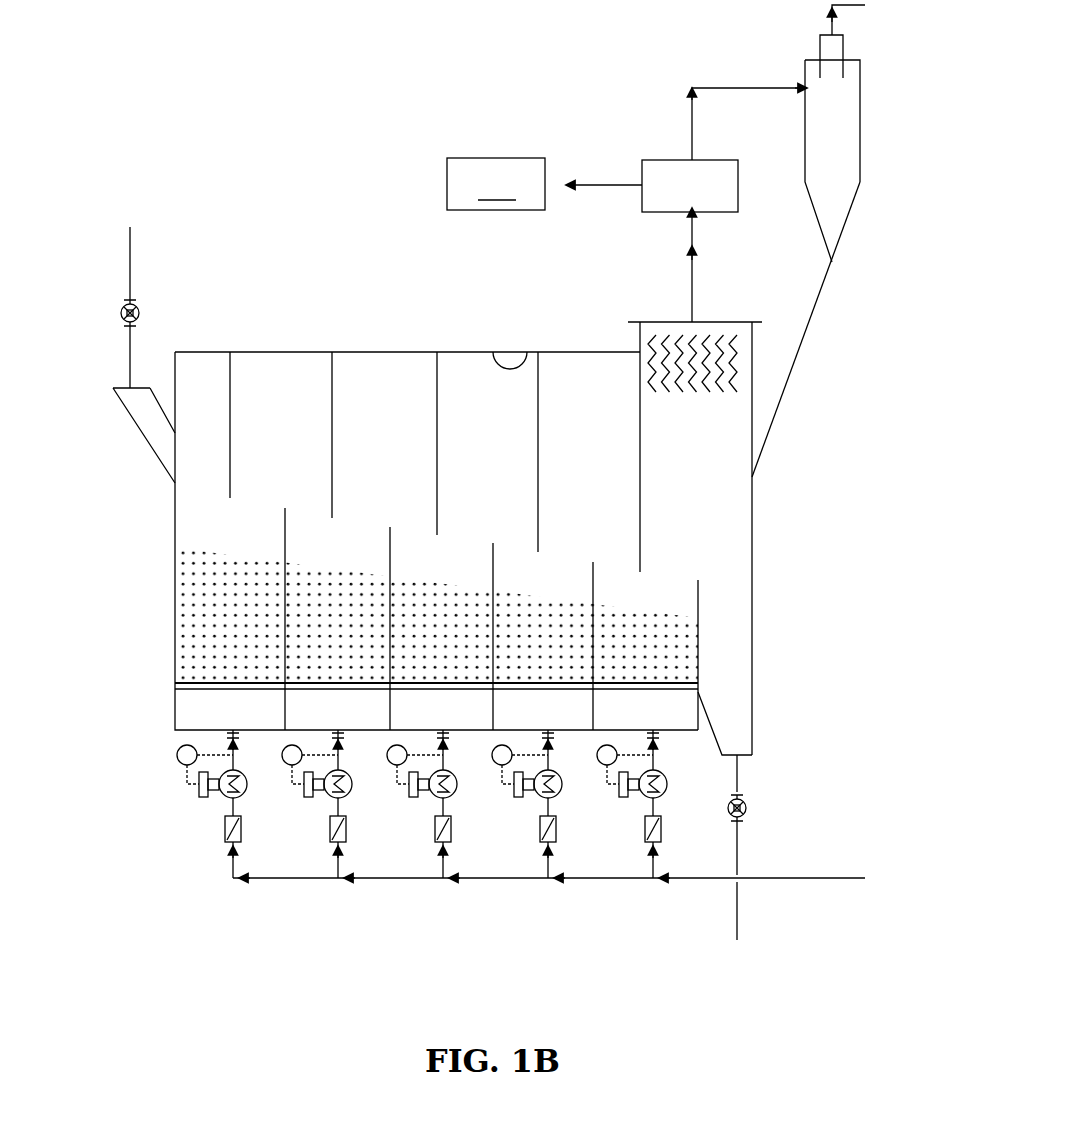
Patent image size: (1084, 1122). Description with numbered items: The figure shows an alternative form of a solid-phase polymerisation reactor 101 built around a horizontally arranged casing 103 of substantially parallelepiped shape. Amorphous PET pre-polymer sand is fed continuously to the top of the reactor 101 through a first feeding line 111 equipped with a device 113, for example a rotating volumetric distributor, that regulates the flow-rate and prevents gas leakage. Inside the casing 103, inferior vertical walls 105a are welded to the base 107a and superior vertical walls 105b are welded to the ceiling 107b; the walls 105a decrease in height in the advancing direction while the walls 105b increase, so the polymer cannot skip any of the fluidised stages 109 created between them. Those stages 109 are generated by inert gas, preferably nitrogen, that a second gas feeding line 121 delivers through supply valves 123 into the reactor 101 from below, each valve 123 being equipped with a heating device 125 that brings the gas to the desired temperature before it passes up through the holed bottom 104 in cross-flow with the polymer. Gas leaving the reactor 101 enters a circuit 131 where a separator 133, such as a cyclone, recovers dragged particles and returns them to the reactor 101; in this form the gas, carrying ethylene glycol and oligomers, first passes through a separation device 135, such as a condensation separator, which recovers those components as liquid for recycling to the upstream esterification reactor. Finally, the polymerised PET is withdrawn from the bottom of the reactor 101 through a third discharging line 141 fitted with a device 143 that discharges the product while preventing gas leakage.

The reactor 101 is at (768, 604).
The casing 103 is at (752, 507).
The holed bottom 104 is at (660, 720).
The inferior vertical walls 105a is at (288, 558).
The superior vertical walls 105b is at (332, 412).
The base 107a is at (258, 728).
The ceiling 107b is at (527, 357).
The fluidised stages 109 is at (467, 642).
The first feeding line 111 is at (138, 238).
The device 113 is at (140, 313).
The second gas feeding line 121 is at (833, 878).
The supply valves 123 is at (235, 728).
The heating device 125 is at (226, 796).
The circuit 131 is at (858, 258).
The separator 133 is at (860, 122).
The separation device 135 is at (703, 160).
The third discharging line 141 is at (735, 912).
The device 143 is at (748, 795).